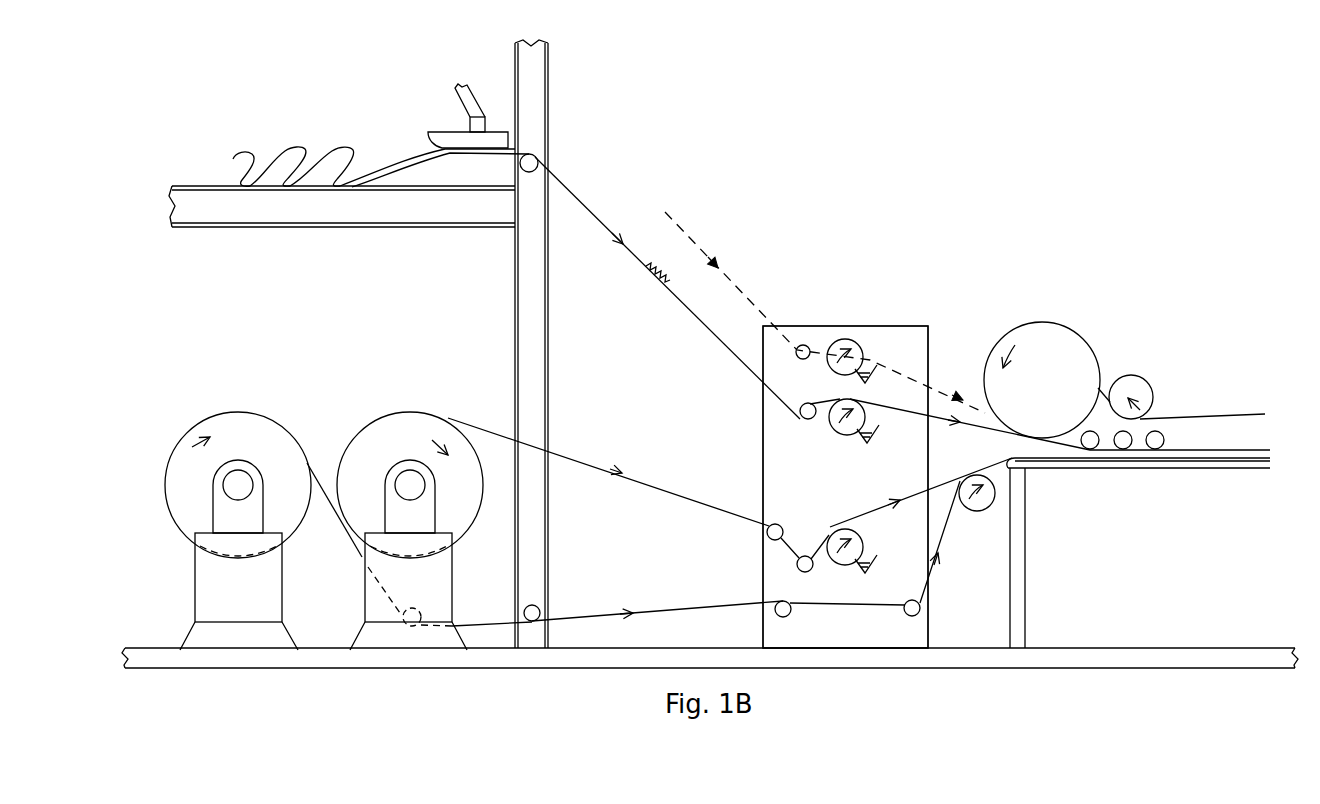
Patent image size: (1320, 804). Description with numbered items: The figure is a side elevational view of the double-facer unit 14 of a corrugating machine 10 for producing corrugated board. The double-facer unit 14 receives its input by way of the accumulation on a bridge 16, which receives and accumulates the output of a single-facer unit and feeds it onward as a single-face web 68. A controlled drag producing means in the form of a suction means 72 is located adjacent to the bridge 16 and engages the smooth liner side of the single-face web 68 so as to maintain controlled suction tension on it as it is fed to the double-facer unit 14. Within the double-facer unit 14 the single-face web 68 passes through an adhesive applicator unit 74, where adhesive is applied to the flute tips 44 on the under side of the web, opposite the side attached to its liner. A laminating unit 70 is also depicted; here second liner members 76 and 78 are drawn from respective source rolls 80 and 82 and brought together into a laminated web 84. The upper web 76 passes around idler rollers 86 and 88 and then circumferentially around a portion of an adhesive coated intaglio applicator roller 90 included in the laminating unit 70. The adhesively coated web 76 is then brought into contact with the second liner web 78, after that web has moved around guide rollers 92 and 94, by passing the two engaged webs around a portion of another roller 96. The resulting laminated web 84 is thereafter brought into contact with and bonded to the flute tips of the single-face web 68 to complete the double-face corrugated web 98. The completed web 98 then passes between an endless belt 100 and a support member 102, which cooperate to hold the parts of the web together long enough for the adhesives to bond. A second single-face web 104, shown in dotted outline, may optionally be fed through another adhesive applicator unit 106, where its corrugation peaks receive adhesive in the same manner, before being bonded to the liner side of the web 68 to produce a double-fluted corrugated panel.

The corrugating machine 10 is at (1015, 175).
The double-facer unit 14 is at (842, 290).
The bridge 16 is at (387, 229).
The flute tips 44 is at (648, 272).
The single-face web 68 is at (582, 200).
The laminating unit 70 is at (758, 553).
The suction means 72 is at (498, 132).
The adhesive applicator unit 74 is at (826, 438).
The second liner member 76 is at (602, 465).
The second liner web 78 is at (592, 617).
The source roll 80 is at (415, 412).
The source roll 82 is at (248, 412).
The laminated web 84 is at (993, 467).
The idler roller 86 is at (778, 524).
The idler roller 88 is at (810, 570).
The intaglio applicator roller 90 is at (850, 540).
The guide roller 92 is at (786, 617).
The guide roller 94 is at (922, 612).
The roller 96 is at (985, 512).
The double-face corrugated web 98 is at (1148, 452).
The endless belt 100 is at (1200, 415).
The support member 102 is at (1205, 470).
The second single-face web 104 is at (697, 250).
The adhesive applicator unit 106 is at (823, 370).